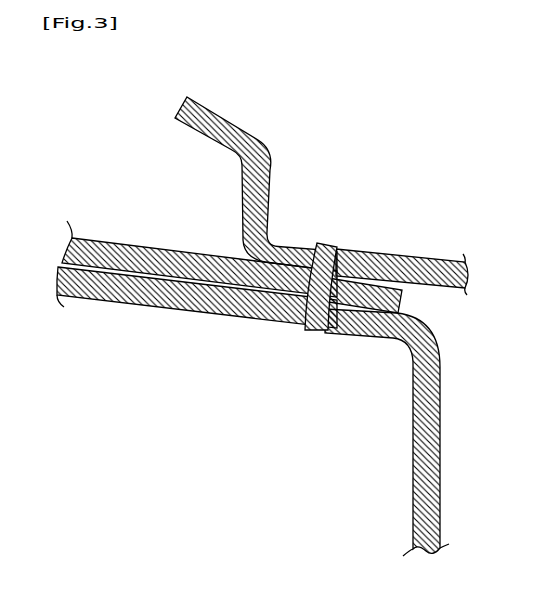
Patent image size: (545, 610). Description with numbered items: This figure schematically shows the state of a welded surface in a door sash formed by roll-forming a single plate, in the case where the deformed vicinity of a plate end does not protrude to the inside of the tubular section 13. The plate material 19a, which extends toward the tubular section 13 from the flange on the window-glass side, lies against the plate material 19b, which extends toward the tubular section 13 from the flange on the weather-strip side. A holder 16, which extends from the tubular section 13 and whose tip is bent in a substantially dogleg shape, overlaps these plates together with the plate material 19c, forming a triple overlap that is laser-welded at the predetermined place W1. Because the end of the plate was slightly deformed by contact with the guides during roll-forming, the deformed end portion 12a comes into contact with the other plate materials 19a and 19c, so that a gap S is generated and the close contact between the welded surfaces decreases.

The end portion 12a is at (403, 294).
The tubular section 13 is at (425, 472).
The holder 16 is at (237, 127).
The plate material 19a is at (178, 303).
The plate material 19b is at (155, 253).
The plate material 19c is at (411, 263).
The welded place W1 is at (333, 268).
The gap S is at (365, 265).